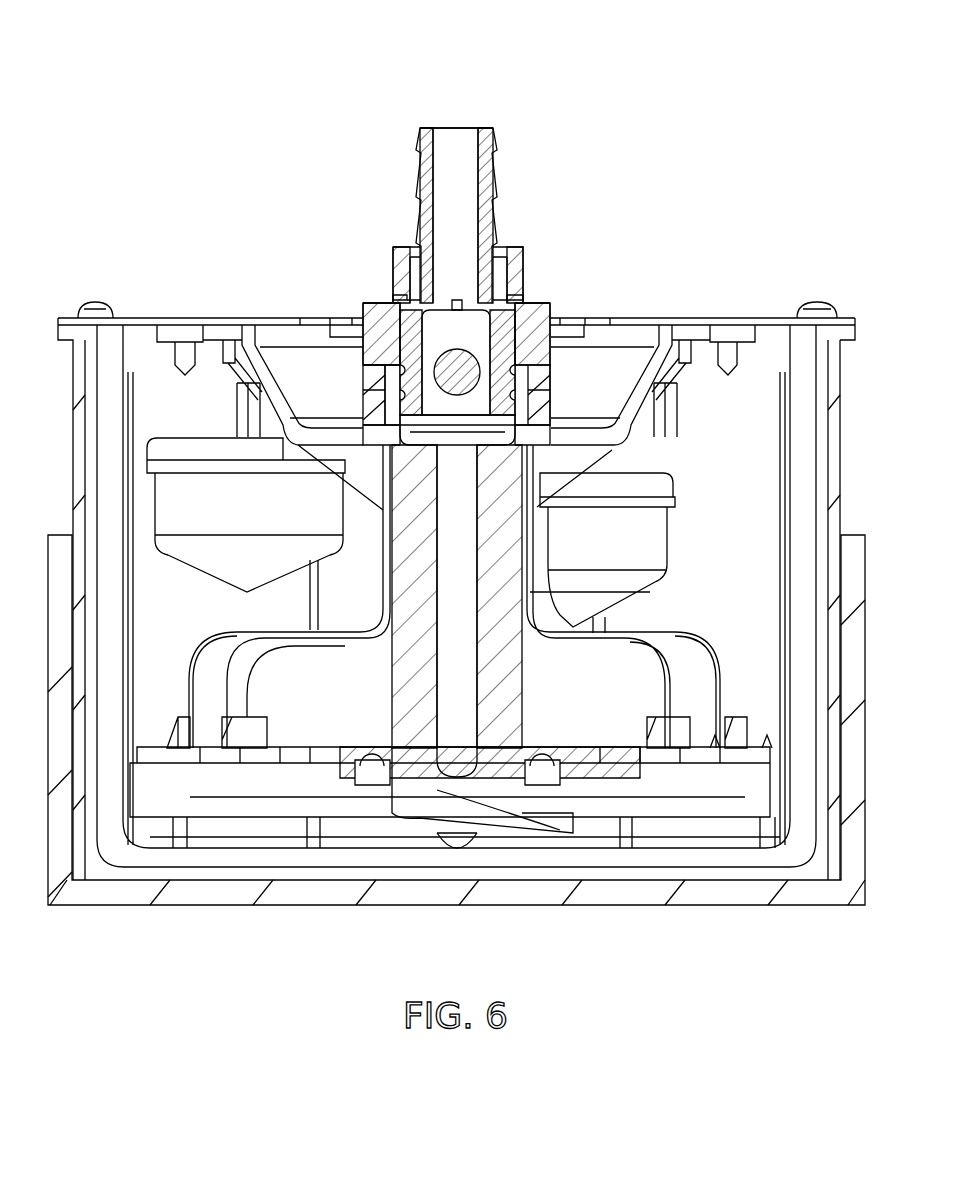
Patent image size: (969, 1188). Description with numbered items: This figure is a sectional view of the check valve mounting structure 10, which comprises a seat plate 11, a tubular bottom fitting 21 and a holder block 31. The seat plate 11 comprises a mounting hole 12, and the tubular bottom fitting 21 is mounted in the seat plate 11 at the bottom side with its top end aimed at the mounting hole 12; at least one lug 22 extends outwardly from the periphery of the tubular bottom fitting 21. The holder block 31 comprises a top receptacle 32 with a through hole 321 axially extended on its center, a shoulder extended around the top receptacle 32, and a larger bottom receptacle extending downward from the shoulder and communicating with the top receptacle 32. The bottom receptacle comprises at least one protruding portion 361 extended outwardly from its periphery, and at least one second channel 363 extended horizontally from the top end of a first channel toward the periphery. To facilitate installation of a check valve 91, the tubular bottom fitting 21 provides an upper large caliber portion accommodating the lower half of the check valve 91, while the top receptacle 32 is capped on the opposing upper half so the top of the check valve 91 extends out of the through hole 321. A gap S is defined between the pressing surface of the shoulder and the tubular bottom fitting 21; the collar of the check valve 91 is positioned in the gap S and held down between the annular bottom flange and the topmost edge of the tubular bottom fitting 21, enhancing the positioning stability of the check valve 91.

The check valve mounting structure 10 is at (625, 217).
The seat plate 11 is at (602, 316).
The mounting hole 12 is at (560, 320).
The tubular bottom fitting 21 is at (538, 451).
The lug 22 is at (290, 333).
The holder block 31 is at (522, 247).
The top receptacle 32 is at (532, 300).
The through hole 321 is at (498, 243).
The protruding portion 361 is at (358, 380).
The second channel 363 is at (388, 335).
The check valve 91 is at (489, 128).
The gap S is at (385, 340).